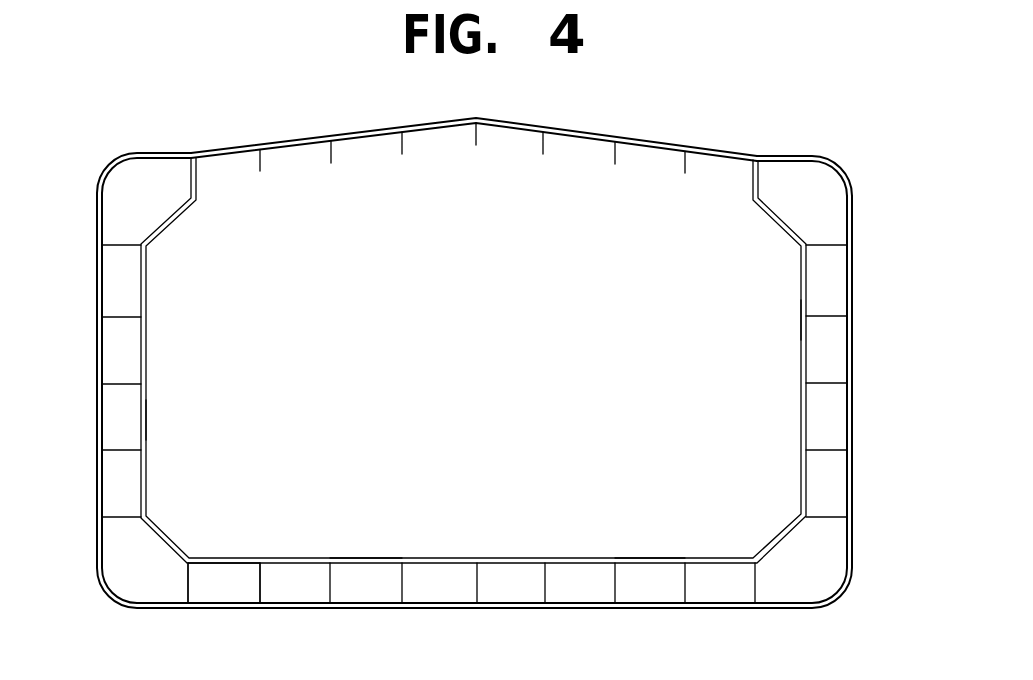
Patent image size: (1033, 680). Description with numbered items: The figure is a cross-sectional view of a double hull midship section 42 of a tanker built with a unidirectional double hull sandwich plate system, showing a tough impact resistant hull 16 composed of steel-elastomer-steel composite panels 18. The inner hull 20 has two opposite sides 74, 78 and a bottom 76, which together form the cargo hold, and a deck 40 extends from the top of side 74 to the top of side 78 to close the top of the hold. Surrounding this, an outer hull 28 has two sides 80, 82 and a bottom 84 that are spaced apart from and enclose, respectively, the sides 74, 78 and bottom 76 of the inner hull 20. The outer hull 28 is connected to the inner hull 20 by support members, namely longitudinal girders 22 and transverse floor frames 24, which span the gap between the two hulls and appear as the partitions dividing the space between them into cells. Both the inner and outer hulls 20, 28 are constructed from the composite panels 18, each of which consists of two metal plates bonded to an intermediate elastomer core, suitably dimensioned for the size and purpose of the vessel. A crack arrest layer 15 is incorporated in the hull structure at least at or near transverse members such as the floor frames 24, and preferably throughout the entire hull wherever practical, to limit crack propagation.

The crack arrest layer 15 is at (645, 605).
The hull 16 is at (852, 355).
The composite panels 18 is at (226, 558).
The inner hull 20 is at (146, 428).
The longitudinal girders 22 is at (402, 140).
The floor frames 24 is at (310, 587).
The outer hull 28 is at (848, 483).
The deck 40 is at (672, 146).
The double hull midship section 42 is at (803, 157).
The side of inner hull 74 is at (146, 355).
The bottom of inner hull 76 is at (378, 558).
The side of inner hull 78 is at (803, 323).
The side of outer hull 80 is at (102, 384).
The side of outer hull 82 is at (847, 322).
The bottom of outer hull 84 is at (545, 605).